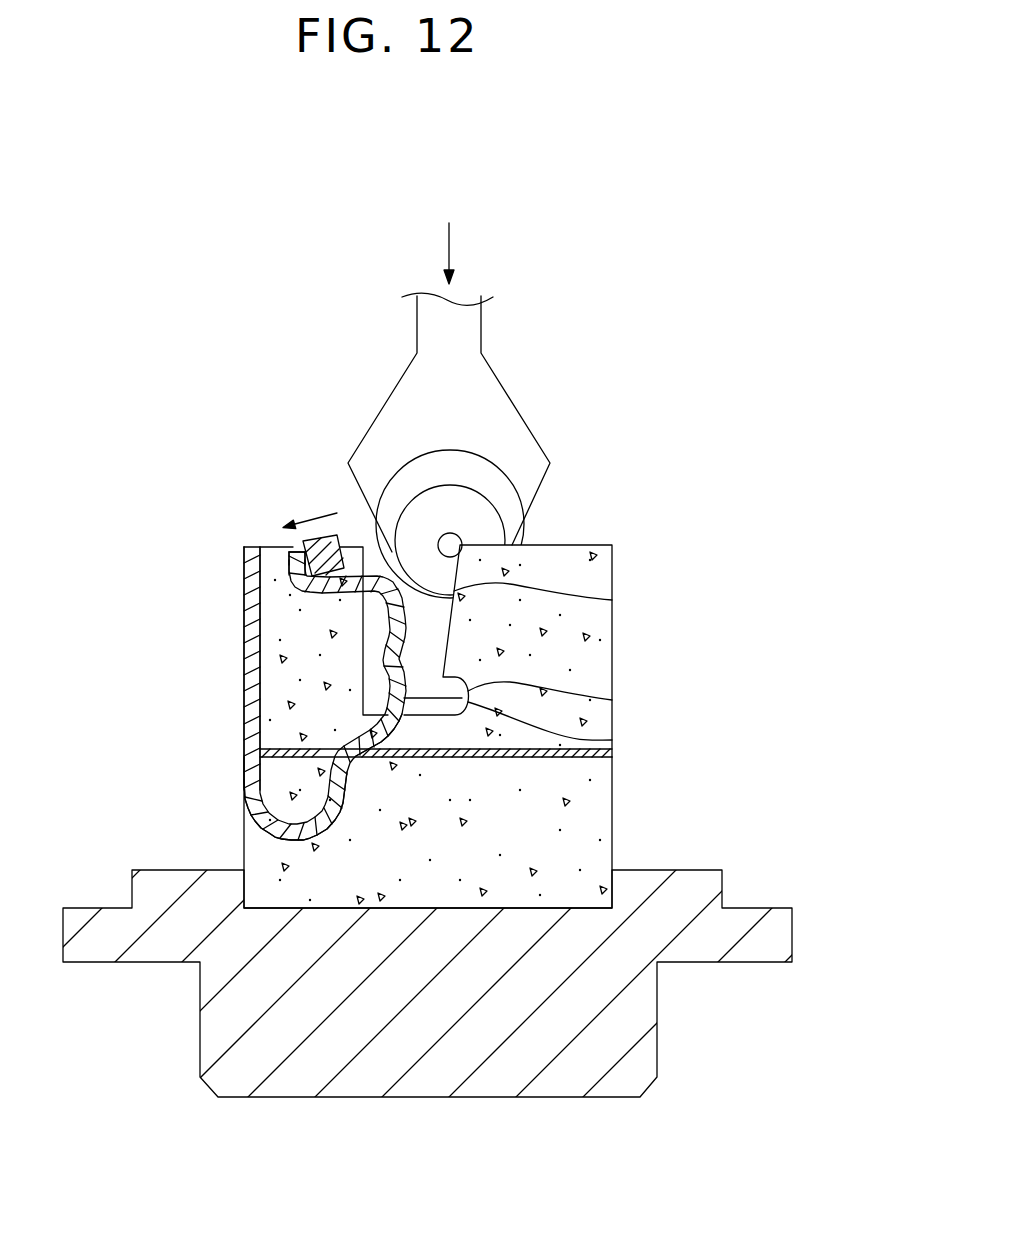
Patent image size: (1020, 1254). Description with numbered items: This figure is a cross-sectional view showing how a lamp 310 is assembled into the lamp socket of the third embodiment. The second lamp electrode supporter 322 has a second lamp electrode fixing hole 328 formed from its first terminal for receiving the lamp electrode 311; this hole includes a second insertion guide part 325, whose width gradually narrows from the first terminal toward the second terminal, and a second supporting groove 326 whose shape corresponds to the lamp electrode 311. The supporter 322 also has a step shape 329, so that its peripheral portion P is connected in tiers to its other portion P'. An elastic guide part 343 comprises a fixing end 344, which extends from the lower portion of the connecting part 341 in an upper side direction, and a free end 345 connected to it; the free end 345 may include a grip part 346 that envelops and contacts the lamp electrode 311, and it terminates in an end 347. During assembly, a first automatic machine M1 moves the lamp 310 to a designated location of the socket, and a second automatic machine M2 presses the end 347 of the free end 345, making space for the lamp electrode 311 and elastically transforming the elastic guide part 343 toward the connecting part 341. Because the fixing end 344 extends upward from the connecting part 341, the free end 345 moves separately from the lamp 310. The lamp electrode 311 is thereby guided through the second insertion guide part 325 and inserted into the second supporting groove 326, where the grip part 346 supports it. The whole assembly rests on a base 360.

The lamp 310 is at (470, 500).
The lamp electrode 311 is at (460, 540).
The second lamp electrode supporter 322 is at (587, 812).
The second insertion guide part 325 is at (612, 600).
The second supporting groove 326 is at (612, 700).
The second lamp electrode fixing hole 328 is at (727, 573).
The step shape 329 is at (243, 750).
The connecting part 341 is at (244, 598).
The elastic guide part 343 is at (141, 640).
The fixing end 344 is at (347, 742).
The free end 345 is at (298, 588).
The grip part 346 is at (612, 740).
The end of the free end 347 is at (293, 548).
The base 360 is at (772, 932).
The first automatic machine M1 is at (494, 386).
The second automatic machine M2 is at (325, 545).
The peripheral portion P is at (224, 667).
The other portion P' is at (253, 815).